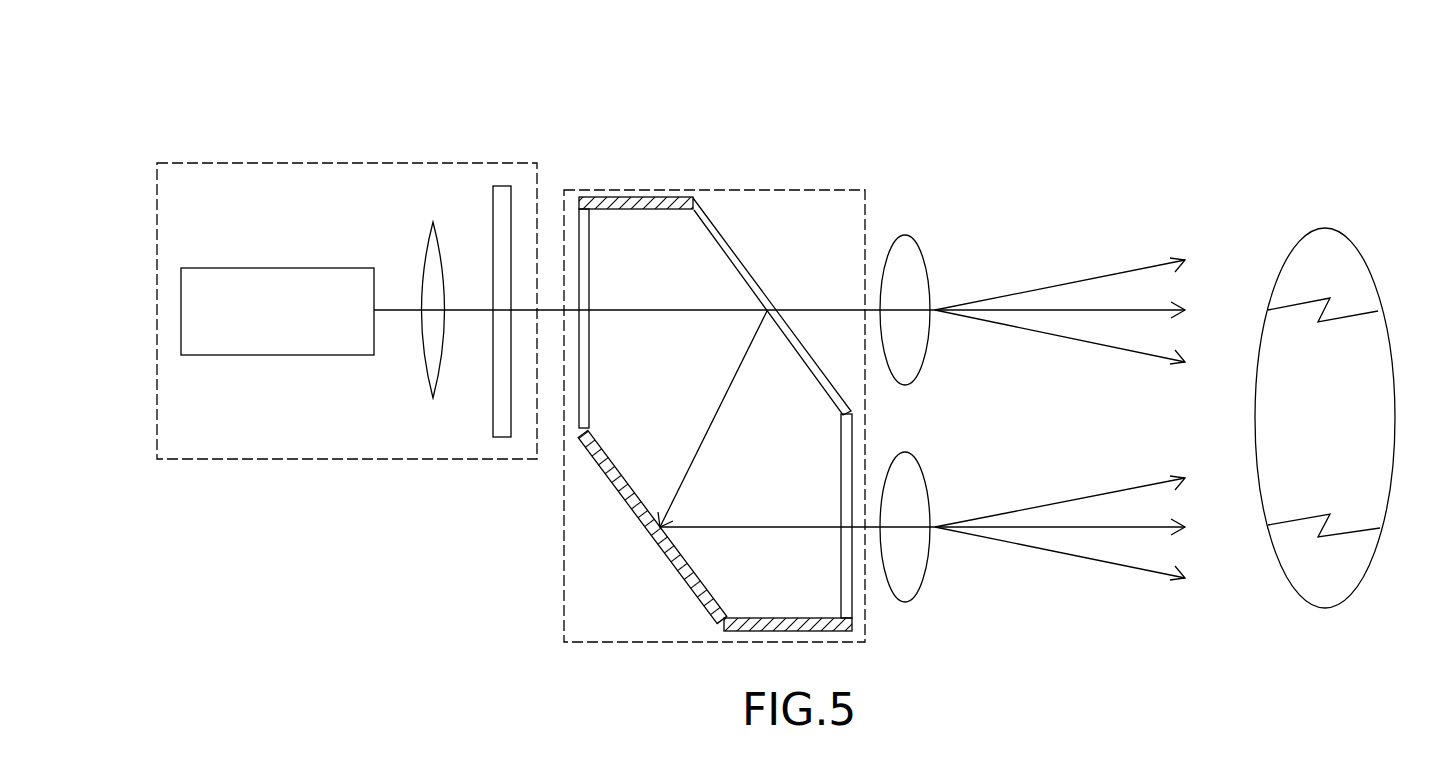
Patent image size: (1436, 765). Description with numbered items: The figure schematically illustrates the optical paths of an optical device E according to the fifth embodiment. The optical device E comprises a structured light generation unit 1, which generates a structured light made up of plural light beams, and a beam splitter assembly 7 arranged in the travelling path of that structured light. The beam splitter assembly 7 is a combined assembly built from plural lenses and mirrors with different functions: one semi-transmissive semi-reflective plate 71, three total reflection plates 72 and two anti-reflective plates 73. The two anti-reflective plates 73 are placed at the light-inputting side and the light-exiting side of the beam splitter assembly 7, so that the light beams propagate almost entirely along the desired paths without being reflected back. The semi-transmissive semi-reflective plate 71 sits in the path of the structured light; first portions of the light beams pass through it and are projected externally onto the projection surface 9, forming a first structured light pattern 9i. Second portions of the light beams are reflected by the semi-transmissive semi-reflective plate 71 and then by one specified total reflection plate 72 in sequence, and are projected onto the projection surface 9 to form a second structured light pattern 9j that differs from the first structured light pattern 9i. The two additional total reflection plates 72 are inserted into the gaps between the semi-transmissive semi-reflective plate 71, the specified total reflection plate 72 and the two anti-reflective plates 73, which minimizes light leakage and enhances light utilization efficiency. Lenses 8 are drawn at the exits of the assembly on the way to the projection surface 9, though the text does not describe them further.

The optical device E is at (441, 66).
The structured light generation unit 1 is at (248, 160).
The beam splitter assembly 7 is at (773, 190).
The semi-transmissive semi-reflective plate 71 is at (741, 262).
The total reflection plate 72 is at (647, 210).
The anti-reflective plate 73 is at (585, 380).
The lens 8 is at (912, 272).
The projection surface 9 is at (1358, 250).
The first structured light pattern 9i is at (1362, 310).
The second structured light pattern 9j is at (1368, 527).